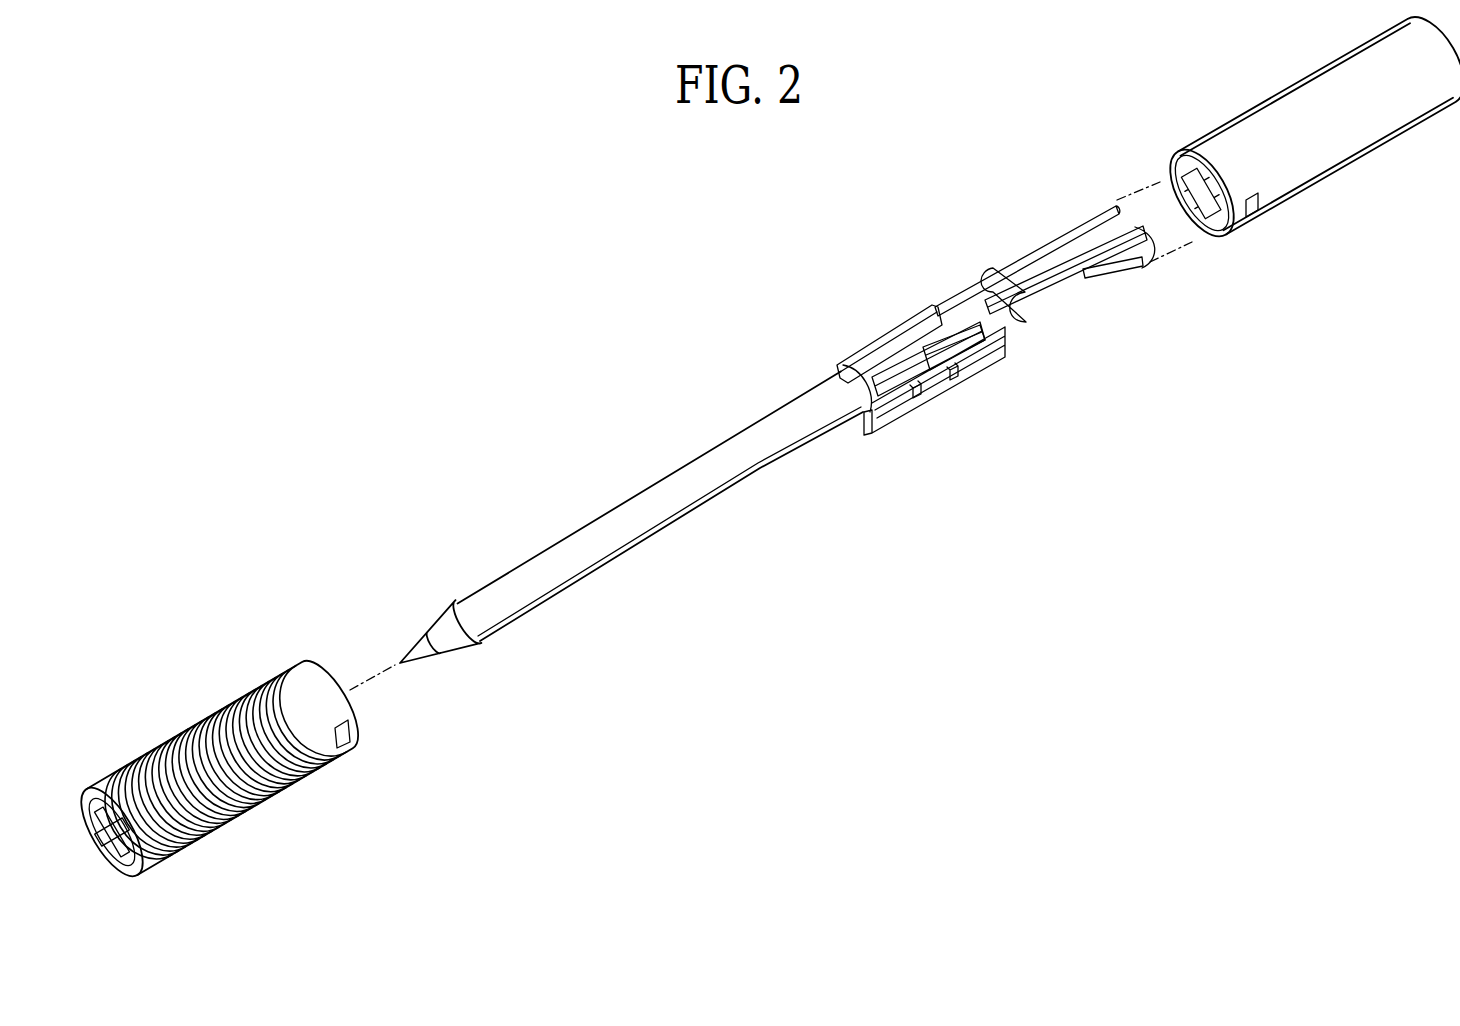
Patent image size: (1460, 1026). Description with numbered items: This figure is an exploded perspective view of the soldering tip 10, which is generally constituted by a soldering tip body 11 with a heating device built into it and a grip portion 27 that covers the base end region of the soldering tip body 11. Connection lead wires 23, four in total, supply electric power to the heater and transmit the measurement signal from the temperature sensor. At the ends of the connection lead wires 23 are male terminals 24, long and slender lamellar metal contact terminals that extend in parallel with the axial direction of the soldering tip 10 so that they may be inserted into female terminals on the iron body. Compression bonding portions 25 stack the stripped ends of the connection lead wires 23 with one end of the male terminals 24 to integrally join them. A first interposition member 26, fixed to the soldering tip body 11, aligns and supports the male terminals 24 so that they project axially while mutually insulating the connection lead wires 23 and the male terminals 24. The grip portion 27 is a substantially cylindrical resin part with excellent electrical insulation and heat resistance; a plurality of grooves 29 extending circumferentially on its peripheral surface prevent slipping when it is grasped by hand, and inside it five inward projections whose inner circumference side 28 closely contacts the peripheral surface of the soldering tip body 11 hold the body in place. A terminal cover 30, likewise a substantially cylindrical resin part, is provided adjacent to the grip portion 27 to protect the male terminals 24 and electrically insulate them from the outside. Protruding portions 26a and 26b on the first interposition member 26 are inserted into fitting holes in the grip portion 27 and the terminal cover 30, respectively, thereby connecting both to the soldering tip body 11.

The soldering tip 10 is at (576, 490).
The soldering tip body 11 is at (522, 608).
The connection lead wires 23 is at (903, 333).
The male terminals 24 is at (1092, 220).
The compression bonding portions 25 is at (990, 283).
The first interposition member 26 is at (907, 418).
The protruding portion 26a is at (936, 400).
The protruding portion 26b is at (962, 380).
The grip portion 27 is at (166, 850).
The inner circumference side 28 is at (118, 856).
The grooves 29 is at (196, 728).
The terminal cover 30 is at (1257, 118).